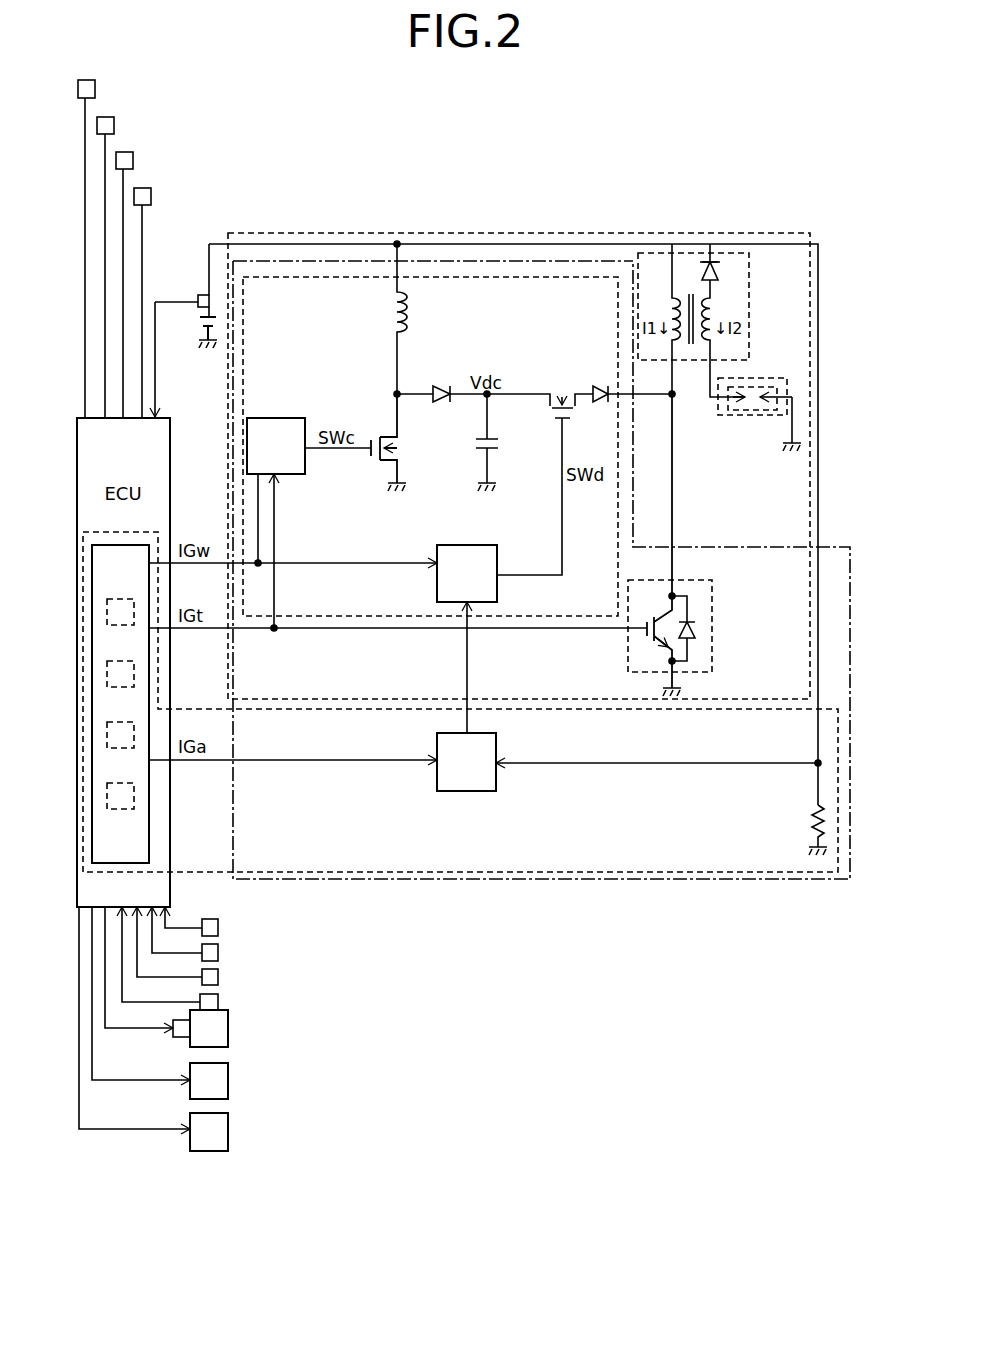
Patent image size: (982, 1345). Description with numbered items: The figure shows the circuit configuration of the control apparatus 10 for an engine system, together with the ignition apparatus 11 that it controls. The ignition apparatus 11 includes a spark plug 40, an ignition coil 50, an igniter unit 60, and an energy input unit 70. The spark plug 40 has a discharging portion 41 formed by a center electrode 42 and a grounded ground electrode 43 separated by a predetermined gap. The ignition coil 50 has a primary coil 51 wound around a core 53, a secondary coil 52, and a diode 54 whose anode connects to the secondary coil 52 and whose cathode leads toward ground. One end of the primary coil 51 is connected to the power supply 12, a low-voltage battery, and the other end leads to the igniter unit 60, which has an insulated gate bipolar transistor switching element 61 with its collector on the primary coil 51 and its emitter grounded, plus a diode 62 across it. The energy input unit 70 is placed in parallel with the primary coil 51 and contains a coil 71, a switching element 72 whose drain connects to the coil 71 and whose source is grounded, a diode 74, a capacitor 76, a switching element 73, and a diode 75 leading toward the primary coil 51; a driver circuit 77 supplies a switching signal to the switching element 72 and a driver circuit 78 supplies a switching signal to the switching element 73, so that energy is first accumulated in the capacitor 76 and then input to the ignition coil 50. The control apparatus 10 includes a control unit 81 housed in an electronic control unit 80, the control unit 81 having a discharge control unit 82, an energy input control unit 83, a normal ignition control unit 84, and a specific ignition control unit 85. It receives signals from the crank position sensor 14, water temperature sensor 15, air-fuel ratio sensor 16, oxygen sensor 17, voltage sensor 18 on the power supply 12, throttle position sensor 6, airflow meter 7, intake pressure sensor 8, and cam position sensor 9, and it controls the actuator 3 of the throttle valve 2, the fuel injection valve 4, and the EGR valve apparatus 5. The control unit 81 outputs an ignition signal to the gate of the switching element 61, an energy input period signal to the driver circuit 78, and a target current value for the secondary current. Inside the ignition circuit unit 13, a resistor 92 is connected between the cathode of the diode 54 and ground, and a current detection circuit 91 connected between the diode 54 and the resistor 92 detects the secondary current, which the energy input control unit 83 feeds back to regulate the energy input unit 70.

The throttle valve 2 is at (228, 1028).
The actuator 3 is at (172, 1033).
The fuel injection valve 4 is at (228, 1082).
The EGR valve apparatus 5 is at (228, 1133).
The throttle position sensor 6 is at (218, 1002).
The airflow meter 7 is at (218, 977).
The intake pressure sensor 8 is at (218, 953).
The cam position sensor 9 is at (218, 928).
The control apparatus 10 is at (600, 880).
The ignition apparatus 11 is at (555, 233).
The power supply 12 is at (201, 322).
The ignition circuit unit 13 is at (313, 260).
The crank position sensor 14 is at (95, 89).
The water temperature sensor 15 is at (114, 125).
The A/F sensor 16 is at (133, 160).
The O2 sensor 17 is at (151, 196).
The voltage sensor 18 is at (198, 296).
The spark plug 40 is at (755, 401).
The discharging portion 41 is at (753, 415).
The center electrode 42 is at (740, 410).
The ground electrode 43 is at (770, 408).
The ignition coil 50 is at (663, 253).
The primary coil 51 is at (670, 301).
The secondary coil 52 is at (712, 301).
The core 53 is at (698, 263).
The diode 54 is at (719, 272).
The igniter unit 60 is at (712, 593).
The switching element 61 is at (652, 638).
The diode 62 is at (697, 631).
The energy input unit 70 is at (468, 277).
The coil 71 is at (395, 312).
The switching element 72 is at (380, 435).
The switching element 73 is at (548, 413).
The diode 74 is at (440, 386).
The diode 75 is at (597, 386).
The capacitor 76 is at (474, 443).
The driver circuit 77 is at (277, 418).
The driver circuit 78 is at (460, 545).
The electronic control unit 80 is at (158, 668).
The control unit 81 is at (149, 803).
The discharge control unit 82 is at (134, 603).
The energy input control unit 83 is at (134, 663).
The normal ignition control unit 84 is at (134, 738).
The specific ignition control unit 85 is at (134, 796).
The current detection circuit 91 is at (497, 743).
The resistor 92 is at (812, 810).